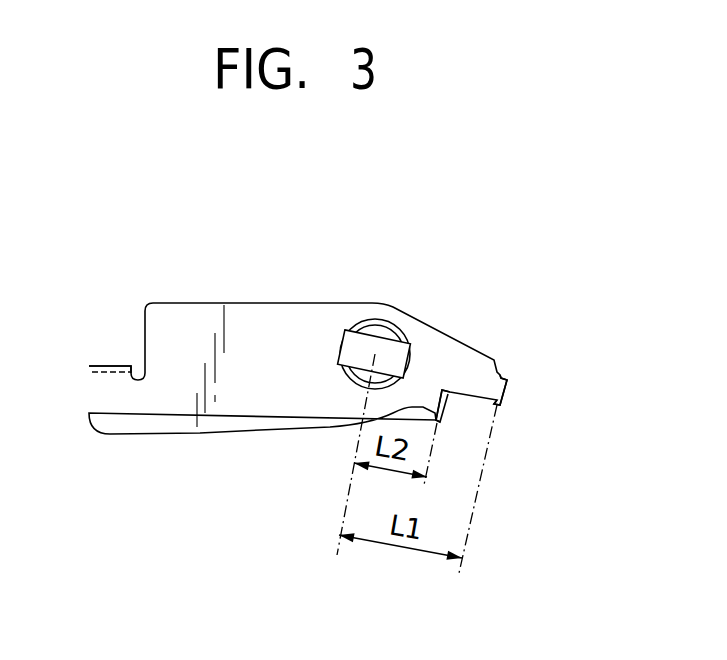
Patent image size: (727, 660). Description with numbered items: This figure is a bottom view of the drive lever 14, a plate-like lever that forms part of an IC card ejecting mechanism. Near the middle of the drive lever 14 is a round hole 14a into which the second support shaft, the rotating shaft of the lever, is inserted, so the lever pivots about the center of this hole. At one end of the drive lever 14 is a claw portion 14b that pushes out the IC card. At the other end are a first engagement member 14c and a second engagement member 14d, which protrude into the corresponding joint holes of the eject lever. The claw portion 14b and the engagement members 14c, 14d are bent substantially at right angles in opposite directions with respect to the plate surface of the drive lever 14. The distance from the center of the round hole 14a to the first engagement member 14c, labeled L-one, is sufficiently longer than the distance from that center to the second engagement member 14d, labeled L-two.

The drive lever 14 is at (264, 298).
The round hole 14a is at (376, 340).
The claw portion 14b is at (112, 366).
The first engagement member 14c is at (507, 384).
The second engagement member 14d is at (447, 410).